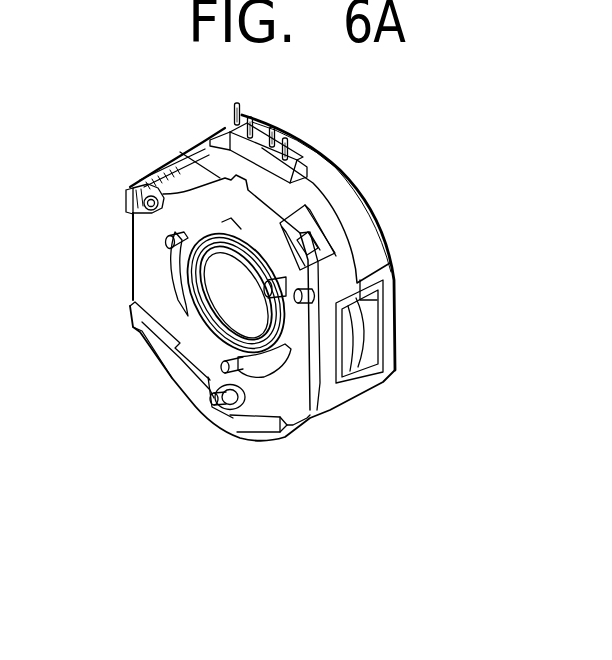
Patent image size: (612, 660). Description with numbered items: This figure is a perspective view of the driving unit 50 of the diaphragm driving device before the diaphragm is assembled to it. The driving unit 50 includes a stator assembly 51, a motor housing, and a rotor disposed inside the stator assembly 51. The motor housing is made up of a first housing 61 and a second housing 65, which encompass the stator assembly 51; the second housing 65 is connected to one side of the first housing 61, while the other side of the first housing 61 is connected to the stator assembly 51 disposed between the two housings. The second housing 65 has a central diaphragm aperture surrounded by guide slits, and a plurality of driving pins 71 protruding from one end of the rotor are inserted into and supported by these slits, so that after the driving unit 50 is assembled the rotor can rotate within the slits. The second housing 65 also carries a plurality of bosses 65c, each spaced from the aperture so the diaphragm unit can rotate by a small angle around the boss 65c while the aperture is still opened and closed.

The driving unit 50 is at (131, 333).
The first housing 61 is at (358, 213).
The second housing 65 is at (212, 152).
The boss 65c is at (127, 197).
The driving pin 71 is at (165, 242).
The stator assembly 51 is at (378, 330).